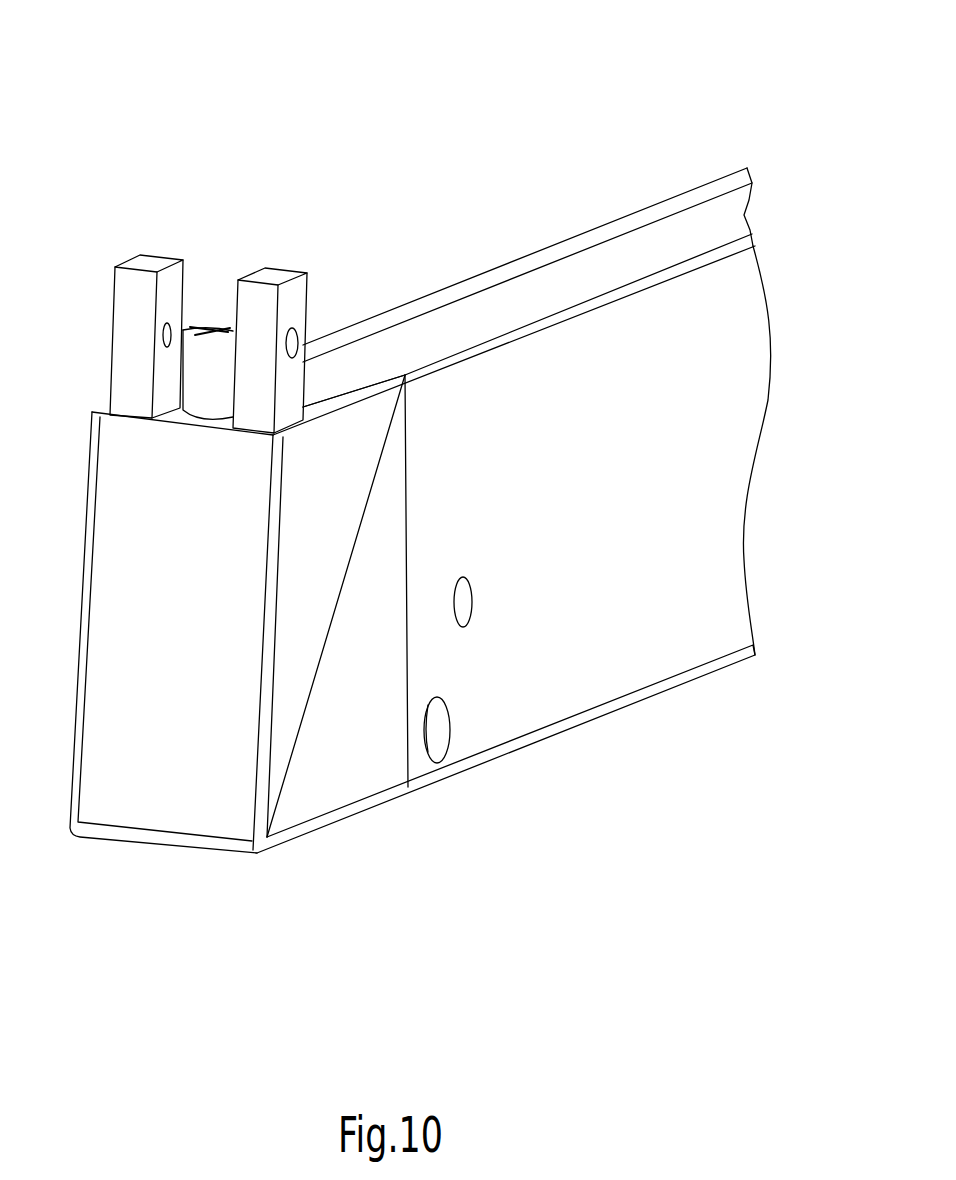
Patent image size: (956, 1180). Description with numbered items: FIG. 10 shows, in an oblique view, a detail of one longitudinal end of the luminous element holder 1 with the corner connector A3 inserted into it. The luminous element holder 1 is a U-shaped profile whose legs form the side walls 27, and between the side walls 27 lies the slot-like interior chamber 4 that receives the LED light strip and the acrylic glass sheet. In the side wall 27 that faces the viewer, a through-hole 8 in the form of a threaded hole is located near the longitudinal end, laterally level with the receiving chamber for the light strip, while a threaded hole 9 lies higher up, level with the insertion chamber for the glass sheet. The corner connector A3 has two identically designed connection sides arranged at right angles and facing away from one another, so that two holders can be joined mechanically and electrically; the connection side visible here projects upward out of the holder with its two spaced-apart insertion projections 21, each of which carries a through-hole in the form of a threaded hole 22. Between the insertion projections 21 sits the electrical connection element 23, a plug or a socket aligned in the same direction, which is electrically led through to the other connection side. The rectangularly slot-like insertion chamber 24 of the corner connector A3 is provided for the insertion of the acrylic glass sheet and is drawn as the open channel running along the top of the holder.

The luminous element holder 1 is at (622, 132).
The interior chamber 4 is at (598, 270).
The side wall 27 is at (512, 270).
The insertion chamber 24 is at (357, 363).
The insertion projection 21 is at (152, 267).
The threaded hole 22 is at (163, 333).
The electrical connection element 23 is at (218, 347).
The threaded hole 9 is at (472, 593).
The through-hole 8 is at (450, 752).
The corner connector A3 is at (353, 873).